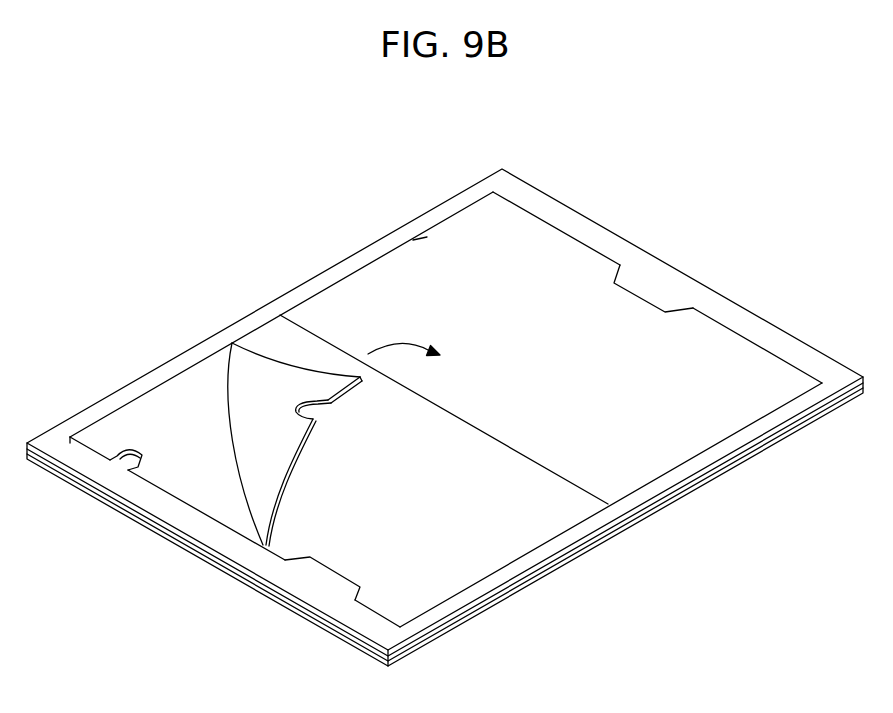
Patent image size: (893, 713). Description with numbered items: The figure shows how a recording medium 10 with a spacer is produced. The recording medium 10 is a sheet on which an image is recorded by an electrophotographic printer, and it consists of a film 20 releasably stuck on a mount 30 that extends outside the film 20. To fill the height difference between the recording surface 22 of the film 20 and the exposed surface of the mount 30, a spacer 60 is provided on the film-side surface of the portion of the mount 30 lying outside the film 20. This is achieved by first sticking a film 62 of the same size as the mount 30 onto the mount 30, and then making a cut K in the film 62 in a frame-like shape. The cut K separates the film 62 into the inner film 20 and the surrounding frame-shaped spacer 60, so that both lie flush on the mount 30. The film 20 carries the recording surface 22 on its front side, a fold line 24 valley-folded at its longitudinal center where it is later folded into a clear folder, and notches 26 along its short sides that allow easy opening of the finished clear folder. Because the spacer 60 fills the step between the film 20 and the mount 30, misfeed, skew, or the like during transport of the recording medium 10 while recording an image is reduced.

The recording medium 10 is at (717, 181).
The film 20 is at (578, 228).
The recording surface 22 is at (677, 377).
The fold line 24 is at (338, 346).
The notches 26 is at (623, 280).
The mount 30 is at (785, 447).
The spacer 60 is at (522, 189).
The film 62 is at (643, 196).
The cut K is at (415, 240).